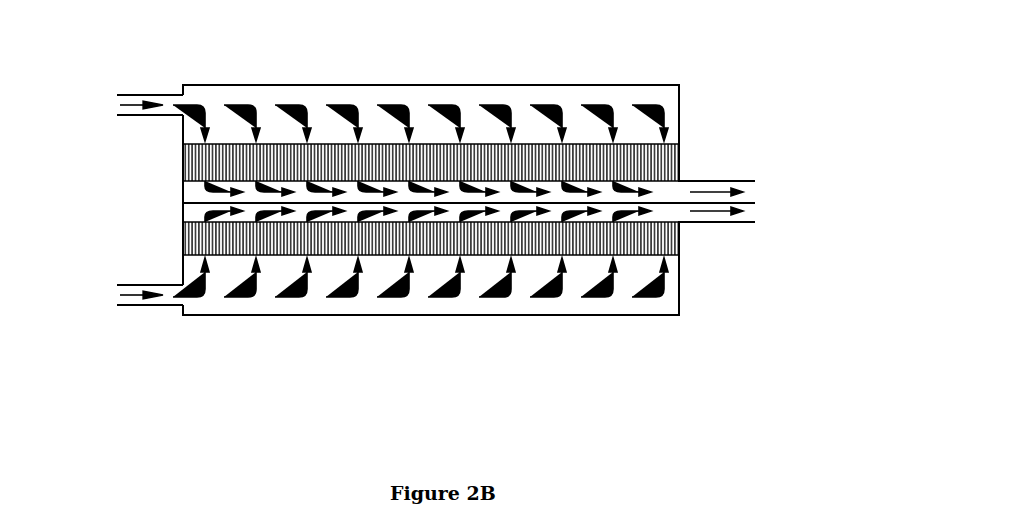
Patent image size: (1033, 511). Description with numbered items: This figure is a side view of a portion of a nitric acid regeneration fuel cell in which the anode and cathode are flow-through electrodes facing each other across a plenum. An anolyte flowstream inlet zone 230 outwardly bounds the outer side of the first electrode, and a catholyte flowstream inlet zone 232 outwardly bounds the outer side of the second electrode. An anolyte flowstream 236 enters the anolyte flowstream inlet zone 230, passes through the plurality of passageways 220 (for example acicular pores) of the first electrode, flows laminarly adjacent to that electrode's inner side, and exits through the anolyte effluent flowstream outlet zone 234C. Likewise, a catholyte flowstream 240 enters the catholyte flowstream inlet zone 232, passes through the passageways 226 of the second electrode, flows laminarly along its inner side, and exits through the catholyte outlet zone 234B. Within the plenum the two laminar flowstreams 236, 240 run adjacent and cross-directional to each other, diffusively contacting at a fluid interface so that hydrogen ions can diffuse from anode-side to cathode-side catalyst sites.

The passageways 220 is at (323, 144).
The passageways 226 is at (625, 258).
The anolyte flowstream inlet zone 230 is at (128, 95).
The catholyte flowstream inlet zone 232 is at (128, 285).
The catholyte outlet zone 234B is at (743, 223).
The anolyte effluent flowstream outlet zone 234C is at (725, 182).
The anolyte flowstream 236 is at (122, 107).
The catholyte flowstream 240 is at (124, 297).